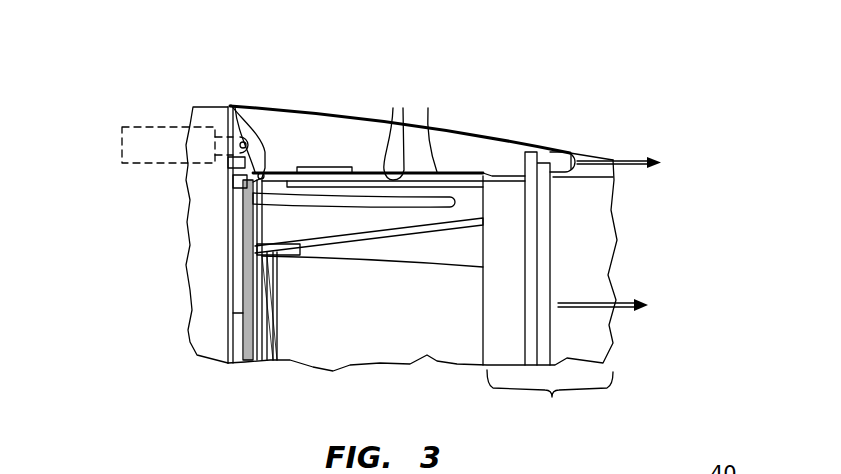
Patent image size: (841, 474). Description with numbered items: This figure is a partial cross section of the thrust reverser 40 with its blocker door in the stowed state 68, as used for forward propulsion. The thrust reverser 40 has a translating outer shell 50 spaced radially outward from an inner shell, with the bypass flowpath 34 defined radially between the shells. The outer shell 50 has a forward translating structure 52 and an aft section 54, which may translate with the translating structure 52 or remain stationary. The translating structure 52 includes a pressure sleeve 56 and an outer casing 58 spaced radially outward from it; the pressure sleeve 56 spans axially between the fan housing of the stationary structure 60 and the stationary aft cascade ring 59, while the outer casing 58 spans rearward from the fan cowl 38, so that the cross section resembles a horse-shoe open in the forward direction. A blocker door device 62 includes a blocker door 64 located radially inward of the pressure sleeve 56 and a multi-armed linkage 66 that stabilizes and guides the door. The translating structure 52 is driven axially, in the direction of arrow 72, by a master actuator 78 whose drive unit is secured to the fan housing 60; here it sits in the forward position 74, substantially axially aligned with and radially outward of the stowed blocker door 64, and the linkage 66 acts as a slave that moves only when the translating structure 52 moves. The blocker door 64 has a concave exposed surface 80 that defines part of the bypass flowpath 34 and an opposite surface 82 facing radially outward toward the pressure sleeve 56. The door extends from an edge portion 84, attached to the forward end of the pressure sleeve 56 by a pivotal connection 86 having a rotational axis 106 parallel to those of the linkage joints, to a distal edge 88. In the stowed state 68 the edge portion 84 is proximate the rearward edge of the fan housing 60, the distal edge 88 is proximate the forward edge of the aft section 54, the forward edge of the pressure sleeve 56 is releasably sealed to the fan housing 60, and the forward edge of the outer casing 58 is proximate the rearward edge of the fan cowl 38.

The bypass flowpath 34 is at (382, 336).
The fan cowl 38 is at (212, 107).
The thrust reverser 40 is at (503, 78).
The translating outer shell 50 is at (448, 341).
The translating structure 52 is at (269, 104).
The aft section 54 is at (550, 289).
The pressure sleeve 56 is at (395, 133).
The outer casing 58 is at (356, 118).
The cascade ring 59 is at (543, 290).
The stationary structure 60 is at (232, 360).
The blocker door device 62 is at (365, 172).
The blocker door 64 is at (413, 237).
The multi-armed linkage 66 is at (287, 205).
The stowed state 68 is at (477, 162).
The arrow 72 is at (618, 160).
The forward position 74 is at (445, 123).
The master actuator 78 is at (137, 164).
The concave exposed surface 80 is at (377, 229).
The opposite surface 82 is at (431, 129).
The edge portion 84 is at (253, 228).
The pivotal connection 86 is at (234, 106).
The distal edge 88 is at (483, 208).
The rotational axis 106 is at (257, 180).